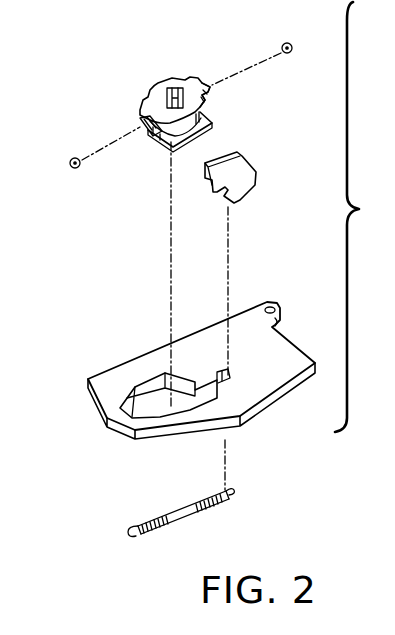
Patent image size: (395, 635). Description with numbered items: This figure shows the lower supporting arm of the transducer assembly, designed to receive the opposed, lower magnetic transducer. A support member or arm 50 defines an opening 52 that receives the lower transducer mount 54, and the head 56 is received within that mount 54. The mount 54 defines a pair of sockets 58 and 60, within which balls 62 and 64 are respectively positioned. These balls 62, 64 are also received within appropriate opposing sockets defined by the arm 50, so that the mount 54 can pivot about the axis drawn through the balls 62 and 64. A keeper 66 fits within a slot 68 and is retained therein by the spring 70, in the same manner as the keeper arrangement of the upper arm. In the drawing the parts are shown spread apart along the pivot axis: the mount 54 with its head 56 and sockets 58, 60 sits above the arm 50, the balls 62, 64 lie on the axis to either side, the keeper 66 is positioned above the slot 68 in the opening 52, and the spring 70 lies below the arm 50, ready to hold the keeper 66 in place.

The support member or arm 50 is at (252, 418).
The opening 52 is at (150, 403).
The lower transducer mount 54 is at (137, 108).
The head 56 is at (157, 79).
The socket 58 is at (150, 129).
The socket 60 is at (211, 87).
The ball 62 is at (69, 163).
The ball 64 is at (292, 43).
The keeper 66 is at (247, 162).
The slot 68 is at (207, 372).
The spring 70 is at (152, 517).